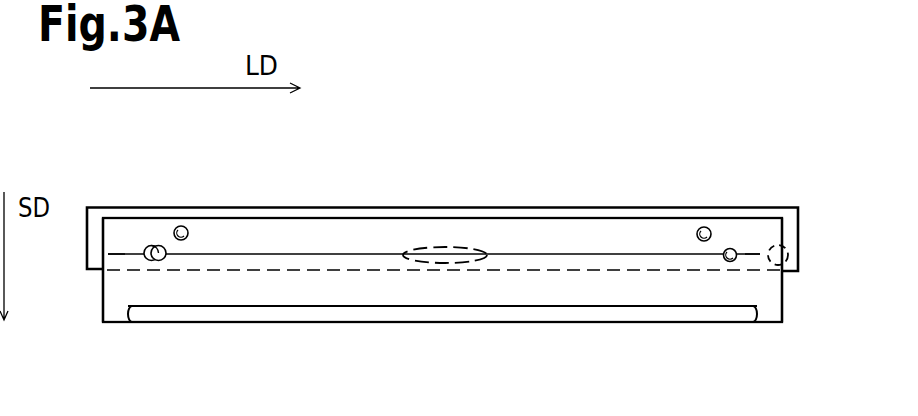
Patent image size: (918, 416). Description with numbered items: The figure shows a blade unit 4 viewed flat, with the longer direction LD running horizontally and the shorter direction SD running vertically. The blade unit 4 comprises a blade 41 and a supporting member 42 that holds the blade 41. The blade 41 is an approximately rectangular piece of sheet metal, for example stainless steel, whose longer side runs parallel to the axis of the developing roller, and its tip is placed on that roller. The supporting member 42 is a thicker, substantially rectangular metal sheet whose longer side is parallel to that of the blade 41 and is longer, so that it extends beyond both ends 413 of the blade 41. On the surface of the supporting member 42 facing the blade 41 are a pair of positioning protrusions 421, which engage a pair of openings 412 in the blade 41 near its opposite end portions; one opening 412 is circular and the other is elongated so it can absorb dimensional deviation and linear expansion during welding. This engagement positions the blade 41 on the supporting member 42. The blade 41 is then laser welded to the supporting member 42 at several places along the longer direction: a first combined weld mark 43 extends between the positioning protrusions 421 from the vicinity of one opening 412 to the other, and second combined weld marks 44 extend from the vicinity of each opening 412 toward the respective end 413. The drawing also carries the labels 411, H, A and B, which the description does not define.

The blade unit 4 is at (665, 139).
The blade 41 is at (312, 235).
The bottom wall of holder 411 is at (463, 313).
The openings 412 is at (155, 261).
The ends of the blade 413 is at (103, 293).
The supporting member 42 is at (380, 207).
The positioning protrusion 421 is at (154, 246).
The first combined weld mark 43 is at (572, 256).
The second combined weld marks 44 is at (125, 255).
The hole H is at (182, 226).
The region A is at (460, 248).
The region B is at (790, 247).